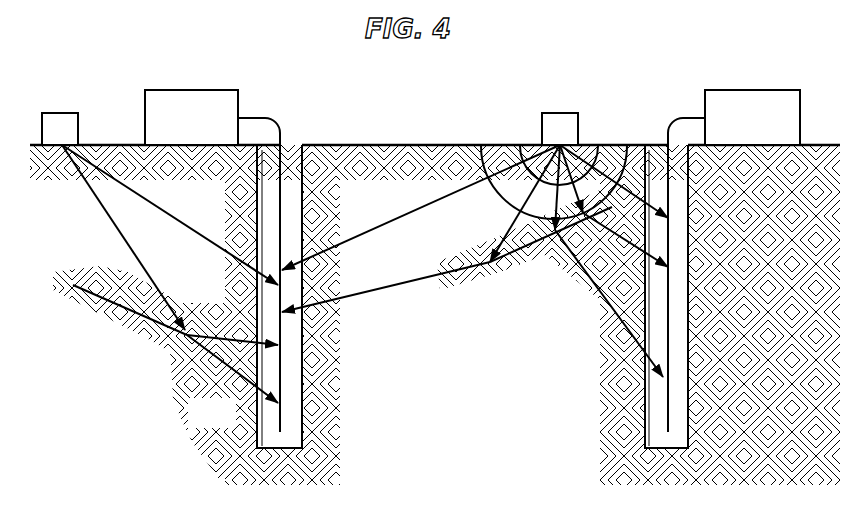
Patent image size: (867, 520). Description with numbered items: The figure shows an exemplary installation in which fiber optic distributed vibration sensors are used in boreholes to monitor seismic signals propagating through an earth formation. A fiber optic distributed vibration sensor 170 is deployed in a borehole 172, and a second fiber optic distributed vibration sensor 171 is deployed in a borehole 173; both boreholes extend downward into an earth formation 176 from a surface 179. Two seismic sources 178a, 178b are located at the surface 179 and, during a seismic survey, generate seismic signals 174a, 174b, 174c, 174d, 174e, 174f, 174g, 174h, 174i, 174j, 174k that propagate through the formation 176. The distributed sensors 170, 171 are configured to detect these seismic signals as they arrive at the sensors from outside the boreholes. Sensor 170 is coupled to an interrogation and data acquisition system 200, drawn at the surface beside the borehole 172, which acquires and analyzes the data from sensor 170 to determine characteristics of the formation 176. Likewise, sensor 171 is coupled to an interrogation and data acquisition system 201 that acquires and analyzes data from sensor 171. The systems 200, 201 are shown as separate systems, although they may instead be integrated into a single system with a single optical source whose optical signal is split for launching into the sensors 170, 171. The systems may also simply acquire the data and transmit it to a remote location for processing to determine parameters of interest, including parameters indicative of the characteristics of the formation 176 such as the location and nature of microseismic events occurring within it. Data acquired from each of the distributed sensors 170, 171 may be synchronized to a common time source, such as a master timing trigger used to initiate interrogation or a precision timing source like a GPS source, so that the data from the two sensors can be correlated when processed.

The fiber optic distributed vibration sensor 170 is at (259, 118).
The fiber optic distributed vibration sensor 171 is at (673, 117).
The borehole 172 is at (314, 377).
The borehole 173 is at (706, 313).
The seismic signal 174a is at (133, 195).
The seismic signal 174b is at (117, 233).
The seismic signal 174c is at (225, 338).
The seismic signal 174d is at (378, 226).
The seismic signal 174e is at (488, 146).
The seismic signal 174f is at (360, 294).
The seismic signal 174g is at (530, 146).
The seismic signal 174h is at (607, 302).
The seismic signal 174i is at (597, 146).
The seismic signal 174j is at (638, 248).
The seismic signal 174k is at (632, 146).
The earth formation 176 is at (230, 424).
The seismic source 178a is at (60, 113).
The seismic source 178b is at (558, 113).
The surface 179 is at (345, 145).
The interrogation and data acquisition system 200 is at (214, 130).
The interrogation and data acquisition system 201 is at (776, 130).